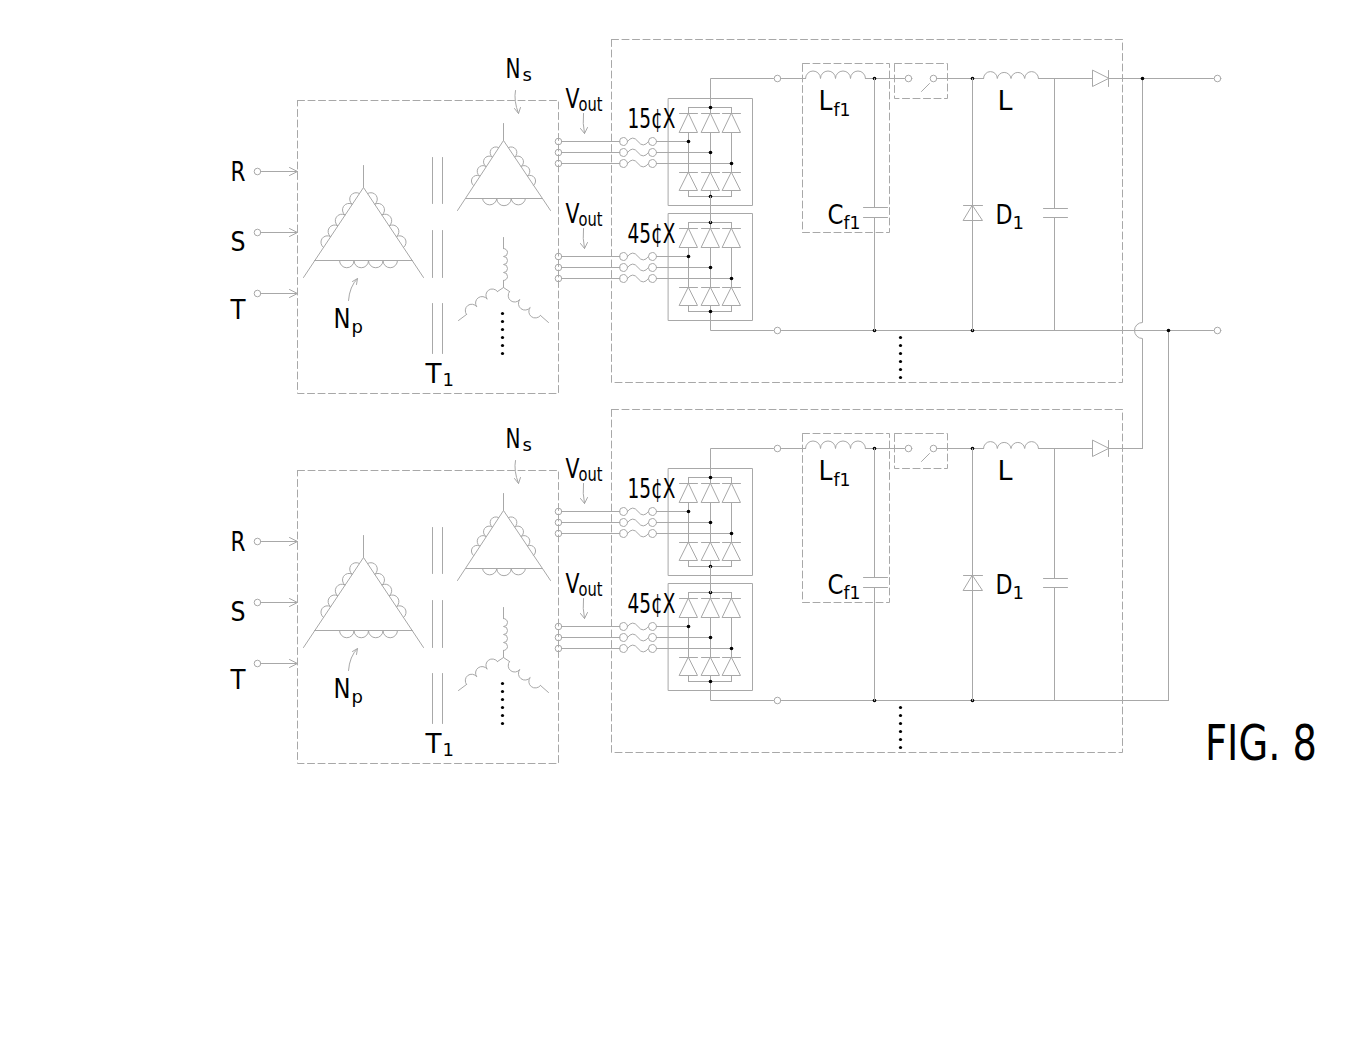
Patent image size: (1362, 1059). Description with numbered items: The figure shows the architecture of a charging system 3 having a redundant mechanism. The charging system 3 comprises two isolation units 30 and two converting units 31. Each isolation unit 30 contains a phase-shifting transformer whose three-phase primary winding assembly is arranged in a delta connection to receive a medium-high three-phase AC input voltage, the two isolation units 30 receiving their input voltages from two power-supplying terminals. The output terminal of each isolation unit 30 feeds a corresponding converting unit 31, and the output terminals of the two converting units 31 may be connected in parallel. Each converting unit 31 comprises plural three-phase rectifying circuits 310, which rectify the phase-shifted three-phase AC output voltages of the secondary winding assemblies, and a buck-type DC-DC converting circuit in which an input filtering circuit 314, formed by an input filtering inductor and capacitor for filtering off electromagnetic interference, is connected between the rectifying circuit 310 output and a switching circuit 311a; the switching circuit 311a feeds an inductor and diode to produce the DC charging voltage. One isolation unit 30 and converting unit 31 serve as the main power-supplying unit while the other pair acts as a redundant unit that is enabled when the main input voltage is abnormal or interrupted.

The charging system 3 is at (709, 390).
The isolation unit 30 is at (420, 100).
The converting unit 31 is at (611, 73).
The three-phase rectifying circuit 310 is at (778, 126).
The switching circuit 311a is at (923, 100).
The input filtering circuit 314 is at (890, 180).